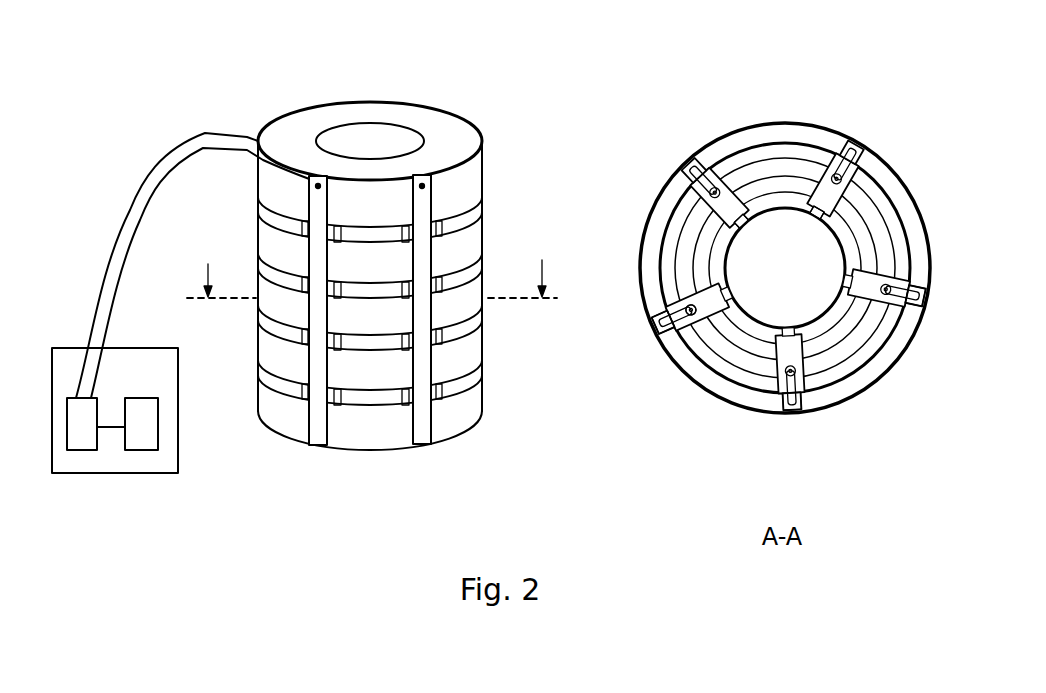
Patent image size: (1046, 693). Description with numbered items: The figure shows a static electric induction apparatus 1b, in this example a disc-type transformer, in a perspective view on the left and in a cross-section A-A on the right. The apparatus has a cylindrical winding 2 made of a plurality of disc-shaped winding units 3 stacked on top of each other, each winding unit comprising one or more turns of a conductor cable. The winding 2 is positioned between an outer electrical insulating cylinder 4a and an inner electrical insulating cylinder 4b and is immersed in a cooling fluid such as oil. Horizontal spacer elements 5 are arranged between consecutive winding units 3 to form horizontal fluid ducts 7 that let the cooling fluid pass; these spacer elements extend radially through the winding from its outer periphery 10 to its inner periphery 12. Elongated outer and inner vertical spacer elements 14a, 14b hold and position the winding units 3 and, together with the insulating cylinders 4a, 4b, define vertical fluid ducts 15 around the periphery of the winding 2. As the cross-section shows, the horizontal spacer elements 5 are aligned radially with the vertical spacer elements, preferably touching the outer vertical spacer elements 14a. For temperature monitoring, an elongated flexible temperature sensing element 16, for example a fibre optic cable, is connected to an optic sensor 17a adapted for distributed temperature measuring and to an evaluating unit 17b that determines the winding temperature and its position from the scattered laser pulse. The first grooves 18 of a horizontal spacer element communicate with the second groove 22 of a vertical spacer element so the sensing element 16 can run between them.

The static electric induction apparatus 1b is at (250, 86).
The winding 2 is at (472, 114).
The winding units 3 is at (473, 404).
The outer electrical insulating cylinder 4a is at (875, 168).
The inner electrical insulating cylinder 4b is at (764, 315).
The horizontal spacer elements 5 is at (297, 392).
The horizontal fluid ducts 7 is at (461, 277).
The outer periphery 10 is at (472, 178).
The inner periphery 12 is at (393, 126).
The outer vertical spacer elements 14a is at (316, 410).
The inner vertical spacer elements 14b is at (748, 225).
The vertical fluid ducts 15 is at (722, 389).
The flexible temperature sensing element 16 is at (143, 222).
The optic sensor 17a is at (73, 427).
The evaluating unit 17b is at (143, 435).
The first grooves 18 is at (686, 311).
The second groove 22 is at (657, 325).